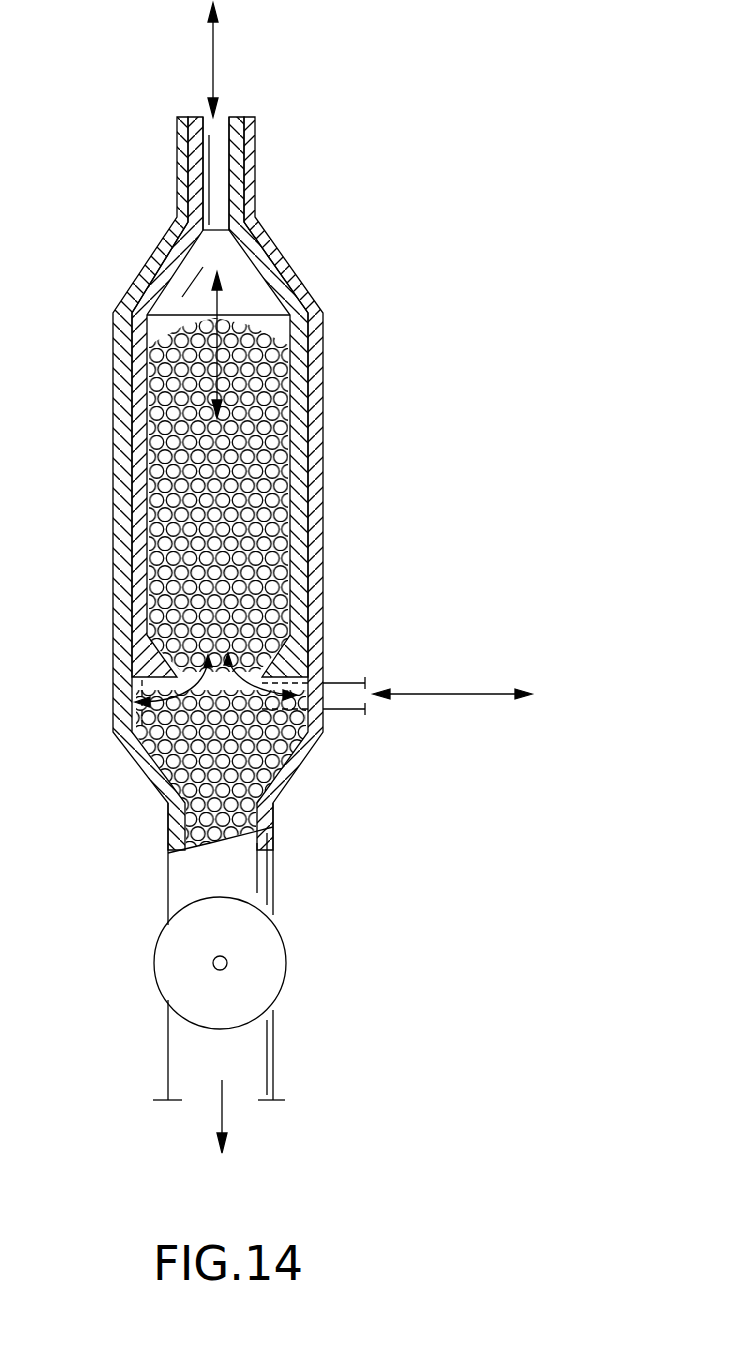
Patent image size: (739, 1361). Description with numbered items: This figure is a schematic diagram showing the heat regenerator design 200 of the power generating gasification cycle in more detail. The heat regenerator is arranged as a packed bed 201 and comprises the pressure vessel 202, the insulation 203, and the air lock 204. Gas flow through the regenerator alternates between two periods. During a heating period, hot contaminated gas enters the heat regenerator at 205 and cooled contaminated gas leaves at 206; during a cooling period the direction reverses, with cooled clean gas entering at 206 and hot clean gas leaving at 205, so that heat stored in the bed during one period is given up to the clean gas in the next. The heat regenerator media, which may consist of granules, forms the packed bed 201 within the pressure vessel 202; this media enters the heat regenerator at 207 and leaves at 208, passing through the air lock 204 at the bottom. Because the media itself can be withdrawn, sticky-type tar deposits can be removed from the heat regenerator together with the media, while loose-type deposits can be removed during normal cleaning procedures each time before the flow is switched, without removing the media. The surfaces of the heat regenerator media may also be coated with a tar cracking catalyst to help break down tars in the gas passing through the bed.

The heat regenerator design 200 is at (441, 93).
The packed bed 201 is at (252, 602).
The pressure vessel 202 is at (317, 483).
The insulation 203 is at (305, 392).
The air lock 204 is at (288, 957).
The hot gas port 205 is at (212, 83).
The cooled gas port 206 is at (430, 697).
The media inlet 207 is at (225, 117).
The media outlet 208 is at (222, 1100).